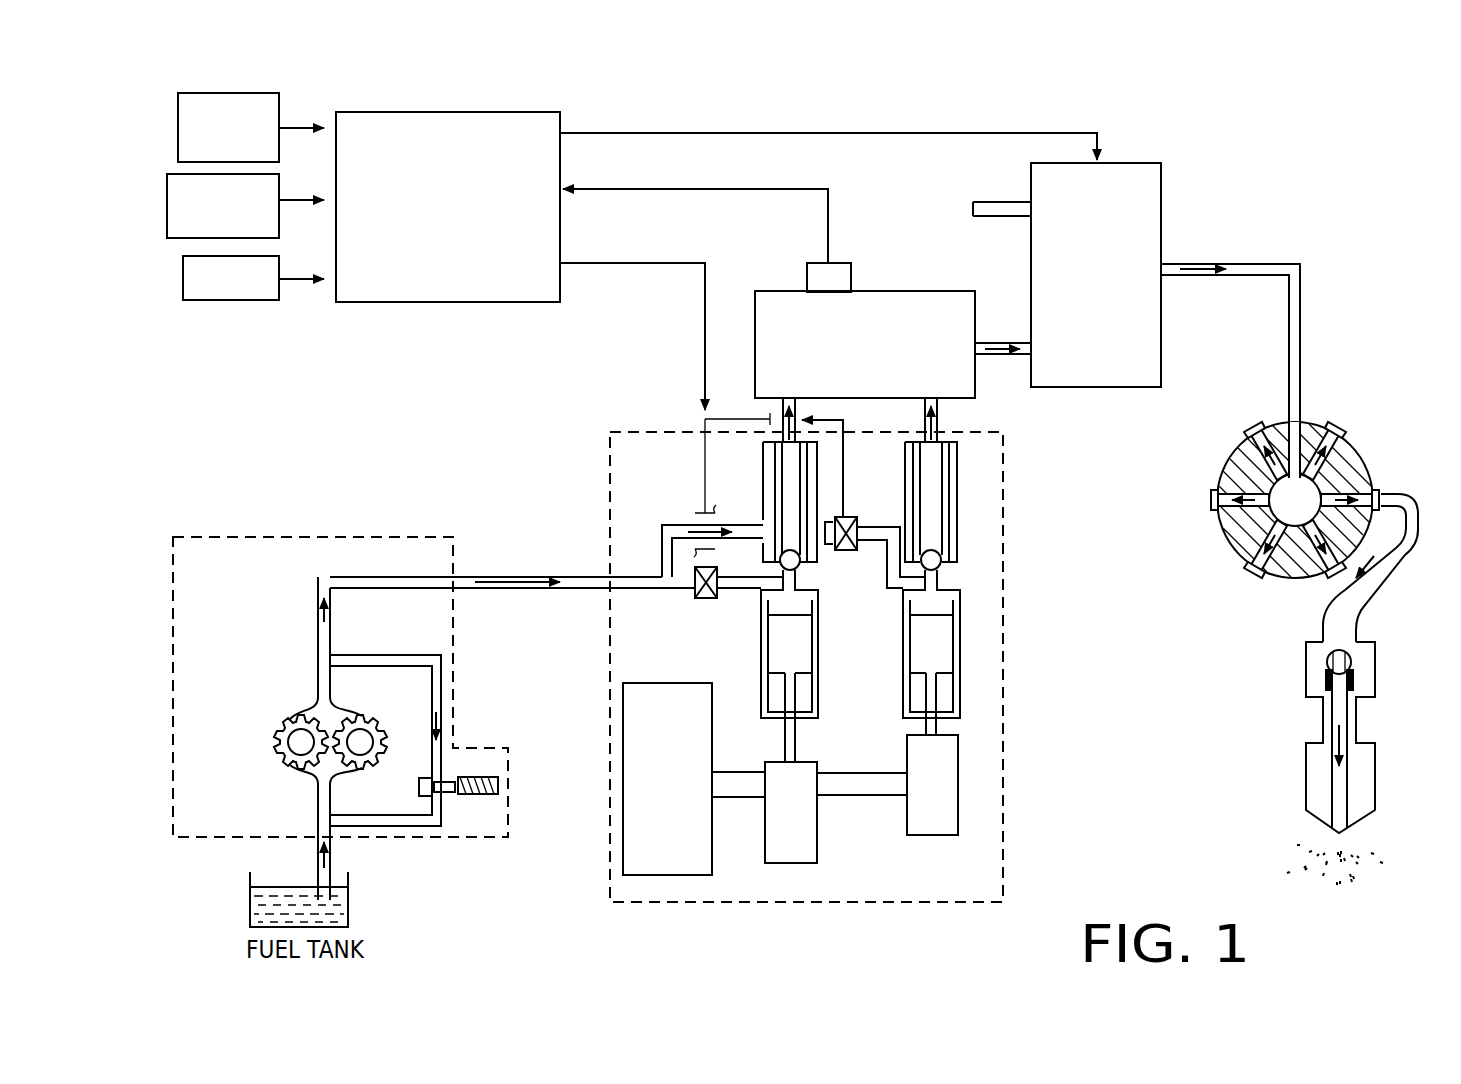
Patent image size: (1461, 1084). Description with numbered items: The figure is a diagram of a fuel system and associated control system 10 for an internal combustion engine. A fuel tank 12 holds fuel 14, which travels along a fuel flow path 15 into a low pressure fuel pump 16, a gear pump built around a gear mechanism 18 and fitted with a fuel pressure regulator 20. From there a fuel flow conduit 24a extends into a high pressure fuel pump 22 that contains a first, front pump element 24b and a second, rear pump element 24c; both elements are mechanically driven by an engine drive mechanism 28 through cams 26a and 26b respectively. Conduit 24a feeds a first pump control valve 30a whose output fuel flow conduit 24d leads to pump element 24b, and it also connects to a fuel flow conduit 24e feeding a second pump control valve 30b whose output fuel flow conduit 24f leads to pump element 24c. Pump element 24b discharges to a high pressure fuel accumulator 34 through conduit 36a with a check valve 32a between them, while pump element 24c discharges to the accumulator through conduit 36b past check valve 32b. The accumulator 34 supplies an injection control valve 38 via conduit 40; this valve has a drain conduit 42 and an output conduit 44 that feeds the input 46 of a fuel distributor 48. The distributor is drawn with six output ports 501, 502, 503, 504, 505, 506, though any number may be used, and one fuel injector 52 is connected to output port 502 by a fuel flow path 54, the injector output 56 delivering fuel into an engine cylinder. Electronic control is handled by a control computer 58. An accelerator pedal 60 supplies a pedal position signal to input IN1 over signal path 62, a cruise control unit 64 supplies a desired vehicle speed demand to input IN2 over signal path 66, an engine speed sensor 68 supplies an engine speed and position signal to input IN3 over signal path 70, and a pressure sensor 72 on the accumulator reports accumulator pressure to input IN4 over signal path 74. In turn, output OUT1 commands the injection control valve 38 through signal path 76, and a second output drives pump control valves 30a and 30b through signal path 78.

The fuel system and associated control system 10 is at (1310, 196).
The fuel tank 12 is at (348, 880).
The fuel 14 is at (272, 892).
The fuel flow path 15 is at (333, 843).
The low pressure fuel pump 16 is at (302, 537).
The gear mechanism 18 is at (286, 730).
The fuel pressure regulator 20 is at (455, 793).
The high pressure fuel pump 22 is at (610, 462).
The fuel flow conduit 24a is at (505, 576).
The first pump element 24b is at (762, 692).
The second pump element 24c is at (903, 690).
The output fuel flow conduit 24d is at (758, 590).
The fuel flow conduit 24e is at (688, 525).
The output fuel flow conduit 24f is at (887, 588).
The cam 26a is at (797, 863).
The cam 26b is at (940, 835).
The engine drive mechanism 28 is at (640, 876).
The first pump control valve 30a is at (695, 596).
The second pump control valve 30b is at (845, 516).
The check valve 32a is at (800, 565).
The check valve 32b is at (938, 567).
The high pressure fuel accumulator 34 is at (912, 291).
The conduit 36a is at (798, 405).
The conduit 36b is at (938, 425).
The injection control valve 38 is at (1161, 193).
The conduit 40 is at (988, 343).
The drain conduit 42 is at (973, 209).
The output conduit 44 is at (1207, 264).
The input 46 is at (1285, 487).
The fuel distributor 48 is at (1363, 455).
The output port 501 is at (1338, 424).
The output port 502 is at (1380, 490).
The output port 503 is at (1335, 575).
The output port 504 is at (1250, 570).
The output port 505 is at (1211, 503).
The output port 506 is at (1252, 428).
The fuel injector 52 is at (1375, 686).
The fuel flow path 54 is at (1393, 567).
The injector output 56 is at (1355, 835).
The control computer 58 is at (436, 302).
The accelerator pedal 60 is at (178, 132).
The signal path 62 is at (288, 128).
The cruise control unit 64 is at (167, 207).
The signal path 66 is at (287, 200).
The engine speed sensor 68 is at (183, 283).
The signal path 70 is at (290, 279).
The pressure sensor 72 is at (848, 263).
The signal path 74 is at (650, 189).
The signal path 76 is at (587, 133).
The signal path 78 is at (580, 263).